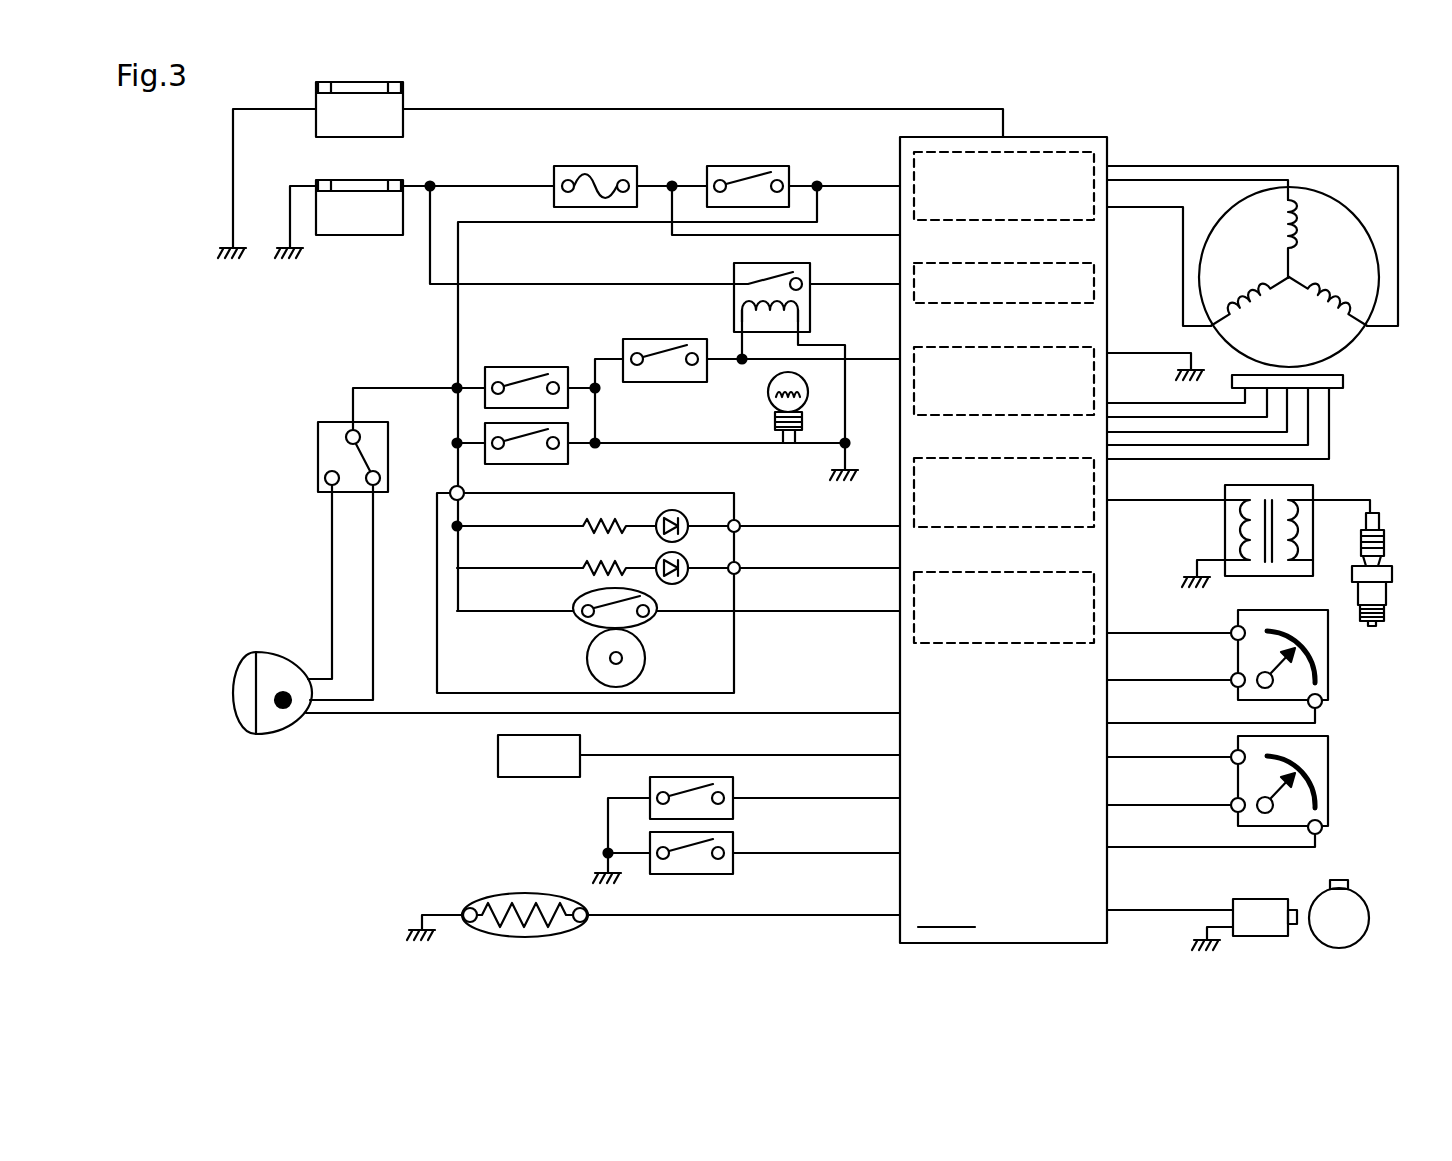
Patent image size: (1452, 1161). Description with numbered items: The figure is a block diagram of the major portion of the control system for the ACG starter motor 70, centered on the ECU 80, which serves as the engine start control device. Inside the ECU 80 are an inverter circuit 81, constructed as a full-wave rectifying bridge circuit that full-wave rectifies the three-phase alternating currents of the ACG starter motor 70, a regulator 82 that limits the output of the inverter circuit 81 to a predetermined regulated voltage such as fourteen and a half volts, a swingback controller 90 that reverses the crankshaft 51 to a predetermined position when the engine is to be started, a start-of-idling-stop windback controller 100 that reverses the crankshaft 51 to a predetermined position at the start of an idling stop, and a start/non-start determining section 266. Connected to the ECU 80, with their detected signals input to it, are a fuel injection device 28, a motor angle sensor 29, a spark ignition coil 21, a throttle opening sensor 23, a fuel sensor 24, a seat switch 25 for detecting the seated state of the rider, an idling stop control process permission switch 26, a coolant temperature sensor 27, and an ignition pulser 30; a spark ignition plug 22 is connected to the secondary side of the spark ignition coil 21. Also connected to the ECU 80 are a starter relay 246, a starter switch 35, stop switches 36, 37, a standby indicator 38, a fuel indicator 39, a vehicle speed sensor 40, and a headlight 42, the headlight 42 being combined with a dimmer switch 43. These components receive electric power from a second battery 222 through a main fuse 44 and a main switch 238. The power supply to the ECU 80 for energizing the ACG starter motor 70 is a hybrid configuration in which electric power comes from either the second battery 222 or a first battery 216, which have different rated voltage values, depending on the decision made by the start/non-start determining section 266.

The first battery 216 is at (378, 82).
The second battery 222 is at (378, 180).
The main fuse 44 is at (593, 166).
The main switch 238 is at (750, 166).
The starter relay 246 is at (812, 272).
The starter switch 35 is at (652, 339).
The stop switch 36 is at (522, 367).
The stop switch 37 is at (555, 465).
The dimmer switch 43 is at (318, 452).
The headlight 42 is at (272, 650).
The standby indicator 38 is at (583, 512).
The fuel indicator 39 is at (583, 557).
The vehicle speed sensor 40 is at (579, 595).
The fuel injection device 28 is at (583, 740).
The seat switch 25 is at (737, 780).
The idling stop control process permission switch 26 is at (737, 838).
The coolant temperature sensor 27 is at (516, 893).
The ECU 80 is at (1003, 559).
The inverter circuit 81 is at (1033, 222).
The regulator 82 is at (1033, 305).
The swingback controller 90 is at (1033, 417).
The start-of-idling-stop windback controller 100 is at (1033, 529).
The start/non-start determining section 266 is at (1033, 645).
The ACG starter motor 70 is at (1366, 339).
The motor angle sensor 29 is at (1346, 380).
The spark ignition coil 21 is at (1292, 485).
The spark ignition plug 22 is at (1390, 556).
The throttle opening sensor 23 is at (1330, 662).
The fuel sensor 24 is at (1330, 786).
The ignition pulser 30 is at (1259, 898).
The crankshaft 51 is at (1370, 915).